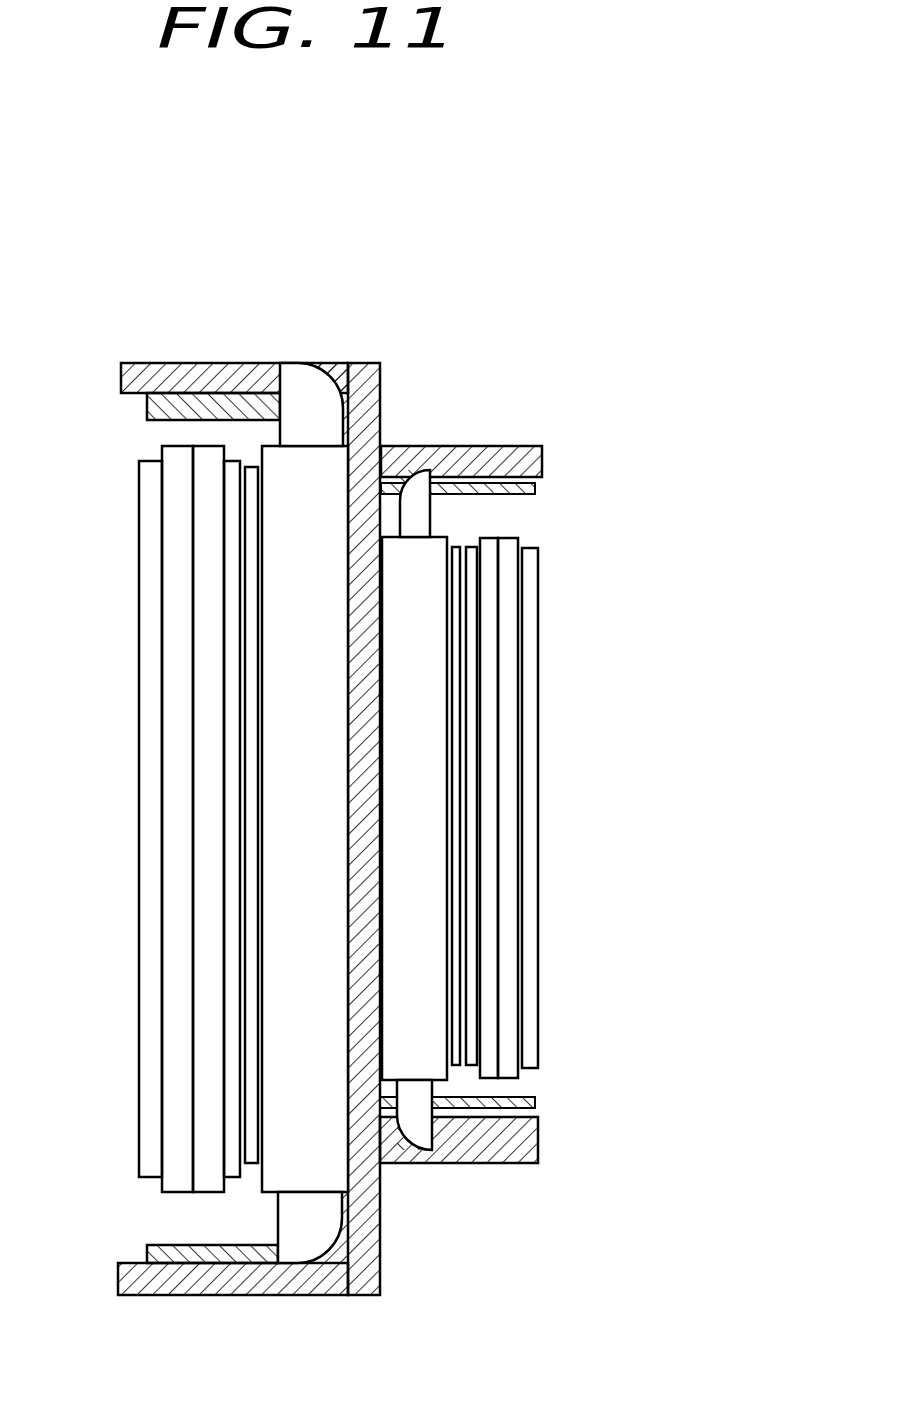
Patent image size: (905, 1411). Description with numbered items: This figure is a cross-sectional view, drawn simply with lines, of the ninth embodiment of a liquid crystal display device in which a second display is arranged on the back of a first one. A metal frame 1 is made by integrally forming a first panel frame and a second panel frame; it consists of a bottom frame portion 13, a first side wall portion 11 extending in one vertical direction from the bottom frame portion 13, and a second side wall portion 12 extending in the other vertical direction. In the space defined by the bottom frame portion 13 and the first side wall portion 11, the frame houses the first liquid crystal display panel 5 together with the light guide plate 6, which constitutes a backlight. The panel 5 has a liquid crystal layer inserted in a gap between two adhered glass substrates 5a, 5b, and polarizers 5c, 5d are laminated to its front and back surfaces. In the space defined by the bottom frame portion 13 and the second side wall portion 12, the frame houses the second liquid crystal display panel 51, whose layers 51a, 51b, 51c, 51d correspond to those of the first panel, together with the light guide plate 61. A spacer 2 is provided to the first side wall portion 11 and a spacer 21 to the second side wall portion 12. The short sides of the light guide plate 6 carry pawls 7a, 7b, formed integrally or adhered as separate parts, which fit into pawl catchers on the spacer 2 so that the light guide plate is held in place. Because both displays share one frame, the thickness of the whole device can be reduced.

The metal frame 1 is at (330, 725).
The first side wall portion 11 is at (233, 372).
The second side wall portion 12 is at (461, 707).
The bottom frame portion 13 is at (350, 363).
The spacer 2 is at (145, 362).
The spacer 21 is at (468, 452).
The first liquid crystal display panel 5 is at (149, 819).
The glass substrate 5a is at (213, 763).
The glass substrate 5b is at (183, 818).
The polarizer 5c is at (210, 883).
The polarizer 5d is at (153, 940).
The second liquid crystal display panel 51 is at (567, 808).
The first layer of second stator 51a is at (483, 770).
The second layer of second stator 51b is at (507, 823).
The third layer of second stator 51c is at (468, 882).
The fourth layer of second stator 51d is at (522, 952).
The light guide plate 6 is at (277, 578).
The light guide plate 61 is at (427, 610).
The pawl 7a is at (422, 515).
The pawl 7b is at (298, 410).